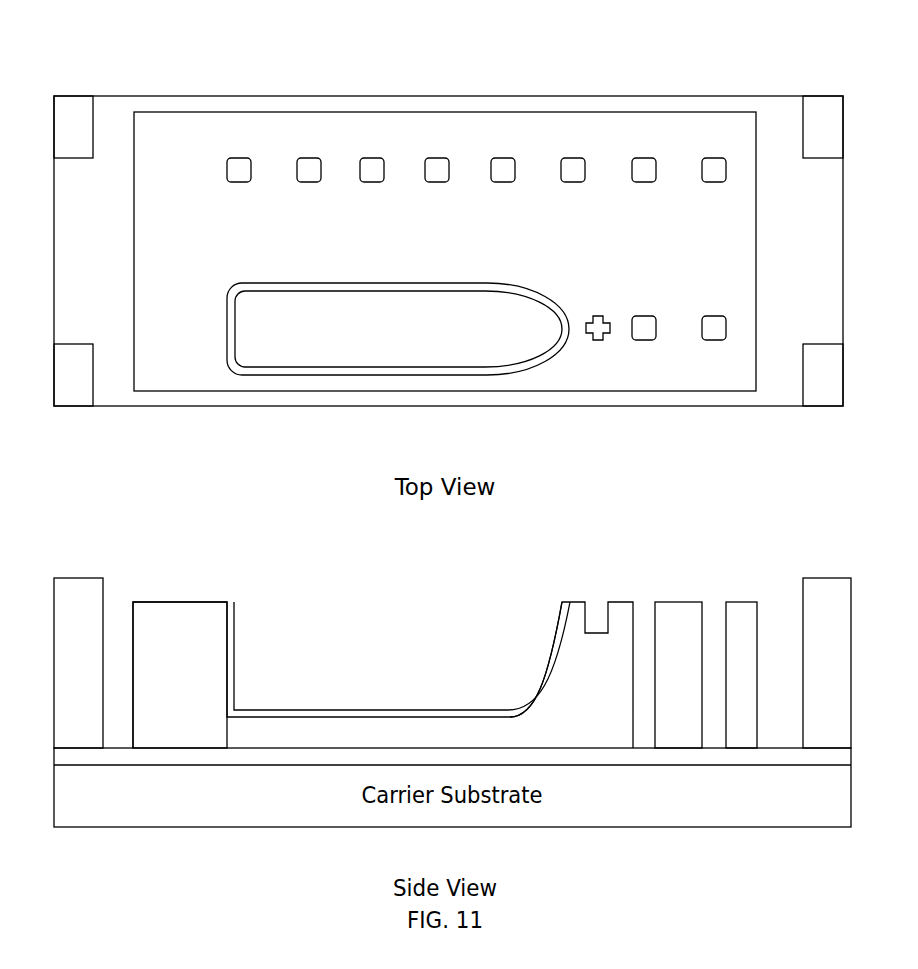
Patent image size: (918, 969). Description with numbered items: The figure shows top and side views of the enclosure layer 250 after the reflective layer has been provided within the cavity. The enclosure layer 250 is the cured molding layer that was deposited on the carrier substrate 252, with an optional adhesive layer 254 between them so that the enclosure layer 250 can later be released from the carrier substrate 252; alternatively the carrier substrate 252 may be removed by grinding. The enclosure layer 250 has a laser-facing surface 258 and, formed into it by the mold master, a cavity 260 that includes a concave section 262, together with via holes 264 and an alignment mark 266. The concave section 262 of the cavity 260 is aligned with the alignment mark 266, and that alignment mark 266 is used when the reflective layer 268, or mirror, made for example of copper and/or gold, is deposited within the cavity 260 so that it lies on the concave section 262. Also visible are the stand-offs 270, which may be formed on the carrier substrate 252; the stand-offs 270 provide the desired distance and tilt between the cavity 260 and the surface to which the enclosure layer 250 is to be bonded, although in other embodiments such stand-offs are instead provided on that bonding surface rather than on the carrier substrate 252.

The enclosure layer 250 is at (464, 27).
The carrier substrate 252 is at (662, 96).
The adhesive layer 254 is at (192, 112).
The laser-facing surface 258 is at (210, 598).
The cavity 260 is at (227, 365).
The concave section 262 is at (533, 655).
The via holes 264 is at (714, 158).
The alignment mark 266 is at (598, 340).
The reflective layer 268 is at (290, 367).
The stand-offs 270 is at (73, 96).